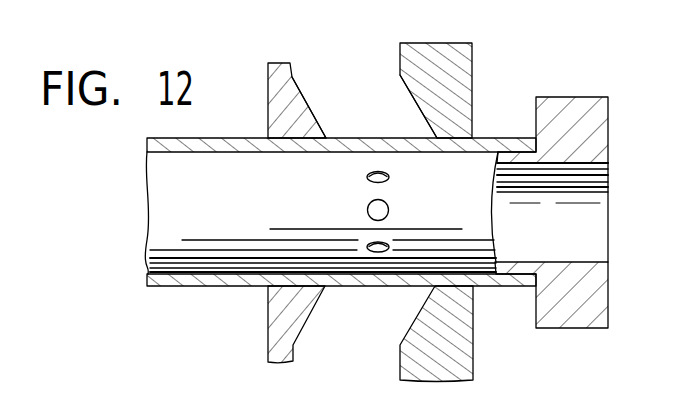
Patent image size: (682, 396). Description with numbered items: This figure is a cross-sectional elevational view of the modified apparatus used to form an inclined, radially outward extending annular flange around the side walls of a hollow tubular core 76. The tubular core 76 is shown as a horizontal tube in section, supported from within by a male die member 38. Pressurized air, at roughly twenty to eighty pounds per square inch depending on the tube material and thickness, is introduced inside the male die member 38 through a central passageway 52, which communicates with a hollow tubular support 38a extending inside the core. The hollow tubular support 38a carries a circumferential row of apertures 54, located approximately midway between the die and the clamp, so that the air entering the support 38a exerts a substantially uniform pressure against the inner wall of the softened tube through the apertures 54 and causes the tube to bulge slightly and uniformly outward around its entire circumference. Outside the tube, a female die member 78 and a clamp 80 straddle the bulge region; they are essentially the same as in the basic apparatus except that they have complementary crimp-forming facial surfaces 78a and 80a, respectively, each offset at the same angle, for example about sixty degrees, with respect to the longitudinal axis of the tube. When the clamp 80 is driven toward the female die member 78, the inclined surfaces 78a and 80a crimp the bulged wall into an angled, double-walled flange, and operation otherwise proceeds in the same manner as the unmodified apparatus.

The tubular core 76 is at (212, 286).
The female die member 78 is at (467, 68).
The crimp-forming facial surface 78a is at (416, 101).
The clamp 80 is at (268, 103).
The crimp-forming facial surface 80a is at (301, 94).
The male die member 38 is at (594, 103).
The hollow tubular support 38a is at (485, 224).
The central passageway 52 is at (598, 242).
The apertures 54 is at (367, 210).